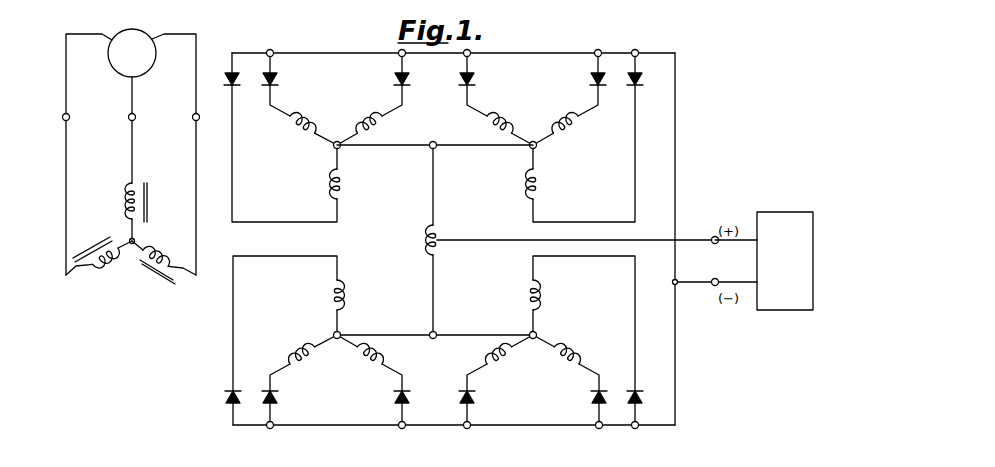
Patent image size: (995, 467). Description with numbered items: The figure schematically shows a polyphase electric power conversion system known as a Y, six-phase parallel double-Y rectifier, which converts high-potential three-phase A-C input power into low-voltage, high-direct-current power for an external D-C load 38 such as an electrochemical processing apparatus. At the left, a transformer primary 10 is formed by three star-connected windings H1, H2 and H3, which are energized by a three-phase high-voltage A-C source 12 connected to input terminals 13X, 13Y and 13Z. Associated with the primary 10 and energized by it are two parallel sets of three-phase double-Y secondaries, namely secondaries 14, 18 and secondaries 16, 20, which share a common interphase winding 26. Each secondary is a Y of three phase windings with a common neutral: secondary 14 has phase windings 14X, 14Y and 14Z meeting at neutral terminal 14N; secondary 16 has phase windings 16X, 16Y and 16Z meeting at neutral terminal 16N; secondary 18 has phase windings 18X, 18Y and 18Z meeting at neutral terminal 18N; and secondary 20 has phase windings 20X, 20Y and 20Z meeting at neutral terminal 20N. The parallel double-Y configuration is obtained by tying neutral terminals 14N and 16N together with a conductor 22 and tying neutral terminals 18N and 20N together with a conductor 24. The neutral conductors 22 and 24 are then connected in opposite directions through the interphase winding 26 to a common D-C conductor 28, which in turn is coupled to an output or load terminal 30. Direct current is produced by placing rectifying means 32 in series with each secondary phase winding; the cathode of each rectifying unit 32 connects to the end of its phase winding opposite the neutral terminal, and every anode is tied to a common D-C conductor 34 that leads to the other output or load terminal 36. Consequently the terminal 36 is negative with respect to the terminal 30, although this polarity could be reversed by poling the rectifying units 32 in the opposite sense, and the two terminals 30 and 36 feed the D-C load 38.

The primary 10 is at (110, 162).
The 3-phase high-voltage A-C source 12 is at (132, 53).
The input terminal 13X is at (62, 116).
The input terminal 13Y is at (128, 116).
The input terminal 13Z is at (192, 116).
The star-connected winding H1 is at (98, 266).
The star-connected winding H2 is at (128, 202).
The star-connected winding H3 is at (162, 253).
The secondary 14 is at (326, 153).
The phase winding 14X is at (298, 116).
The phase winding 14Y is at (383, 125).
The phase winding 14Z is at (346, 182).
The neutral terminal 14N is at (344, 128).
The secondary 16 is at (542, 153).
The phase winding 16X is at (490, 126).
The phase winding 16Y is at (561, 117).
The phase winding 16Z is at (524, 182).
The neutral terminal 16N is at (539, 148).
The secondary 18 is at (326, 326).
The phase winding 18X is at (301, 366).
The phase winding 18Y is at (347, 293).
The phase winding 18Z is at (383, 357).
The neutral terminal 18N is at (333, 333).
The secondary 20 is at (541, 326).
The phase winding 20X is at (490, 357).
The phase winding 20Y is at (523, 296).
The phase winding 20Z is at (573, 366).
The neutral terminal 20N is at (538, 334).
The conductor 22 is at (461, 148).
The conductor 24 is at (406, 333).
The interphase winding 26 is at (426, 243).
The common D-C conductor 28 is at (483, 240).
The output or load terminal 30 is at (712, 237).
The rectifying means 32 is at (266, 78).
The common D-C conductor 34 is at (677, 143).
The output or load terminal 36 is at (712, 286).
The external D-C load 38 is at (785, 261).